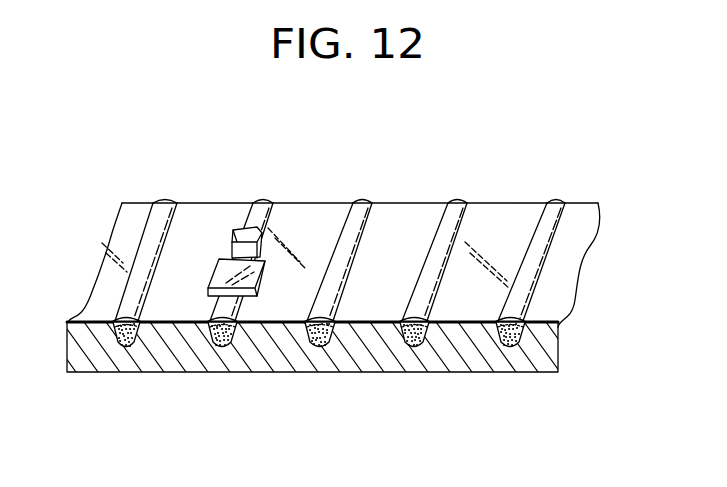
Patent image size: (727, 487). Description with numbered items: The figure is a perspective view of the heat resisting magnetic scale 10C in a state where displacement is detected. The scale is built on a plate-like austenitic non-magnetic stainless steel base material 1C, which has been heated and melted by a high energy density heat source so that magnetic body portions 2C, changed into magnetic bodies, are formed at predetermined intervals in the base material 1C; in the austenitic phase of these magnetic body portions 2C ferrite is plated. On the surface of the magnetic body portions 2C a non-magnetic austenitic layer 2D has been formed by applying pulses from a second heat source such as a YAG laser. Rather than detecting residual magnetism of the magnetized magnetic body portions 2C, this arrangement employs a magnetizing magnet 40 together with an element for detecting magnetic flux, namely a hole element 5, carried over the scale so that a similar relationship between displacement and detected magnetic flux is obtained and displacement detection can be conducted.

The magnetic scale 10C is at (320, 299).
The base material 1C is at (455, 348).
The magnetic body portions 2C is at (110, 348).
The non-magnetic austenitic layer 2D is at (547, 210).
The hole element 5 is at (243, 297).
The magnetizing magnet 40 is at (238, 228).